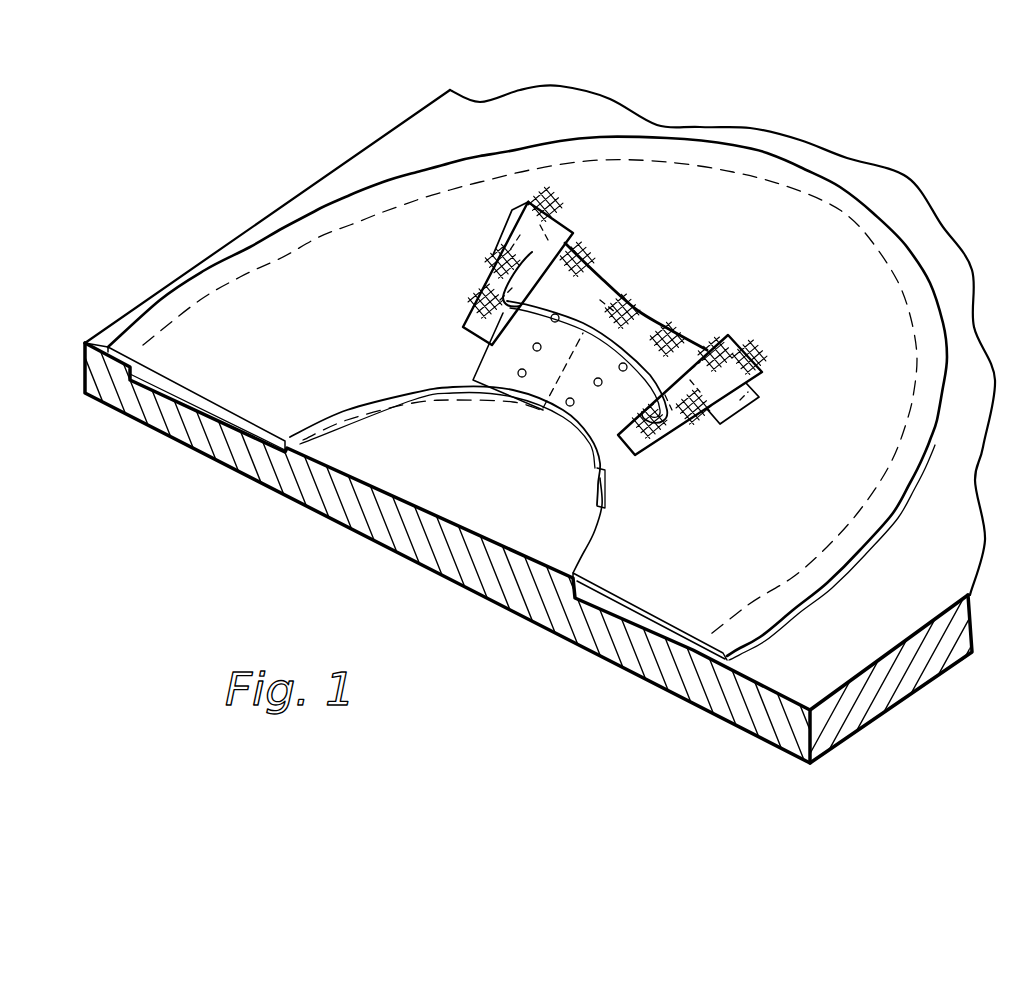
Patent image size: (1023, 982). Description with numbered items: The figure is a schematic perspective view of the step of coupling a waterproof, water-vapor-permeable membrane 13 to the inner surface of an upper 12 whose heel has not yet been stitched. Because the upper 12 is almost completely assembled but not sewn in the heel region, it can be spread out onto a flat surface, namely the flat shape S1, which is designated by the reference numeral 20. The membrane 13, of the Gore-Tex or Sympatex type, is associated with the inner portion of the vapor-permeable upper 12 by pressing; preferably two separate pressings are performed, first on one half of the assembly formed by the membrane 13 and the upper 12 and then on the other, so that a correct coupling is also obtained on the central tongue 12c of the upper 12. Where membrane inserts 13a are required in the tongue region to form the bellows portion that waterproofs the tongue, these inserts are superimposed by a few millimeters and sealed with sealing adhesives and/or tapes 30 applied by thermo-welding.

The upper 12 is at (180, 392).
The central tongue 12c is at (645, 385).
The membrane 13 is at (292, 297).
The membrane inserts 13a is at (590, 347).
The flat shape 20 is at (483, 500).
The sealing adhesives and/or tapes 30 is at (590, 292).
The flat shape S1 is at (297, 480).